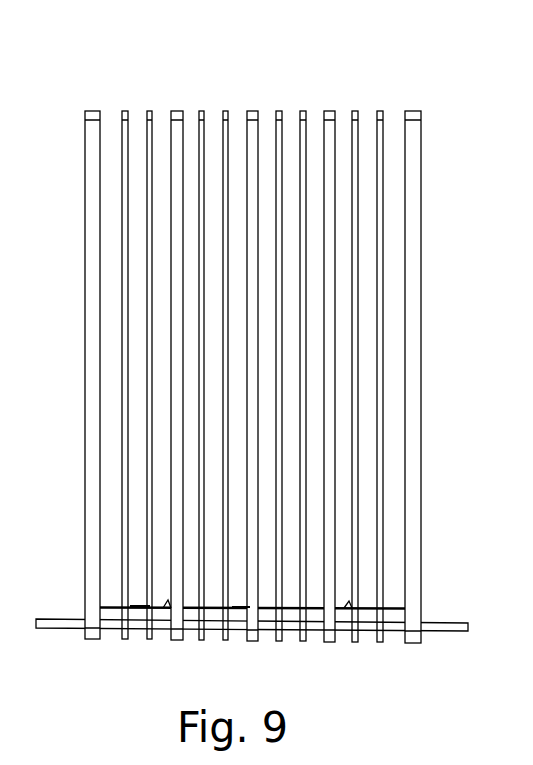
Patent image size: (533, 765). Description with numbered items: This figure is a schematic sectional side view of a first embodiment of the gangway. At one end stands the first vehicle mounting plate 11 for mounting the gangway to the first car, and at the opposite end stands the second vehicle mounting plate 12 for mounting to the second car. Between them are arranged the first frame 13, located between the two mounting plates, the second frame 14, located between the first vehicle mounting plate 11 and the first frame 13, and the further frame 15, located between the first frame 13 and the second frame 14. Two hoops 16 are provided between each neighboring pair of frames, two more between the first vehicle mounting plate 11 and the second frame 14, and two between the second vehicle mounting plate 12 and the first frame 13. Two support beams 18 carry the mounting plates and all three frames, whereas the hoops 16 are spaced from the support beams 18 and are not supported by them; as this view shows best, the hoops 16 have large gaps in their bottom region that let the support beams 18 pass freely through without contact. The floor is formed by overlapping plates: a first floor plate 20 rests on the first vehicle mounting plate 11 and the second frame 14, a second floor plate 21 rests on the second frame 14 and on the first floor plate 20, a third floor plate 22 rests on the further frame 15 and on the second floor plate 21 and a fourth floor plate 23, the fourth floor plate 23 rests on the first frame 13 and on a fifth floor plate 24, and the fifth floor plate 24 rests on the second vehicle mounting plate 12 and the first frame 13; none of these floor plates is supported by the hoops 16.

The first vehicle mounting plate 11 is at (413, 117).
The second vehicle mounting plate 12 is at (91, 112).
The first frame 13 is at (181, 111).
The second frame 14 is at (332, 111).
The further frame 15 is at (255, 111).
The hoops 16 is at (150, 111).
The support beams 18 is at (450, 623).
The first floor plate 20 is at (388, 609).
The second floor plate 21 is at (351, 605).
The third floor plate 22 is at (243, 608).
The fourth floor plate 23 is at (170, 600).
The fifth floor plate 24 is at (143, 608).